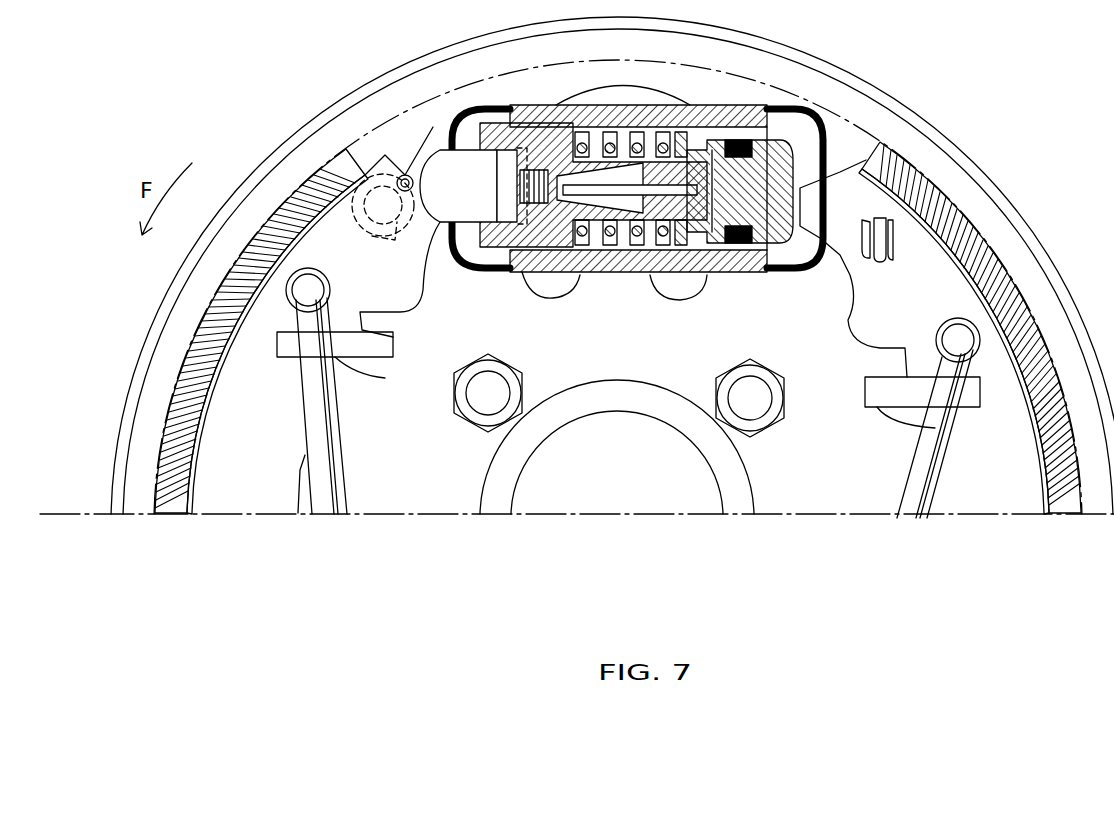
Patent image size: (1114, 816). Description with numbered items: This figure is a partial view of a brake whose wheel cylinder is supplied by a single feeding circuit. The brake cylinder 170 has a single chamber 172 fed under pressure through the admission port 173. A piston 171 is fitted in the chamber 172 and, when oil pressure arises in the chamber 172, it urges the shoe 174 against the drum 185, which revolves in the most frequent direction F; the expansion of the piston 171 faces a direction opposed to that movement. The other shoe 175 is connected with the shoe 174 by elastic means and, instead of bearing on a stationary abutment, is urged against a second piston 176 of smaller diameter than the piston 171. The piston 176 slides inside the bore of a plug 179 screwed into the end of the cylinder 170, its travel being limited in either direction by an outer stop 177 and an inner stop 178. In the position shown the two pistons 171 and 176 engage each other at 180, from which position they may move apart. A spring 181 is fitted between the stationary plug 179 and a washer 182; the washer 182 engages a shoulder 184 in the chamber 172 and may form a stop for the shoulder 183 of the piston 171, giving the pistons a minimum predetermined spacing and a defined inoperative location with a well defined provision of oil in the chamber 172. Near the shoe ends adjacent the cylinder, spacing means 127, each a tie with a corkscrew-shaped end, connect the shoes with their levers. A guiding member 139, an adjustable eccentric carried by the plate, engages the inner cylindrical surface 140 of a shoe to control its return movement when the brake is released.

The spacing means 127 is at (893, 246).
The guiding member 139 is at (397, 236).
The inner cylindrical surface 140 is at (312, 224).
The brake cylinder 170 is at (742, 108).
The piston 171 is at (778, 112).
The chamber 172 is at (586, 128).
The admission port 173 is at (620, 125).
The shoe 174 is at (848, 302).
The other shoe 175 is at (423, 292).
The piston 176 is at (502, 262).
The outer stop 177 is at (470, 262).
The inner stop 178 is at (600, 252).
The plug 179 is at (536, 125).
The interengaging position 180 is at (650, 128).
The spring 181 is at (690, 262).
The washer 182 is at (712, 268).
The shoulder 183 is at (684, 128).
The shoulder 184 is at (712, 136).
The drum 185 is at (928, 134).